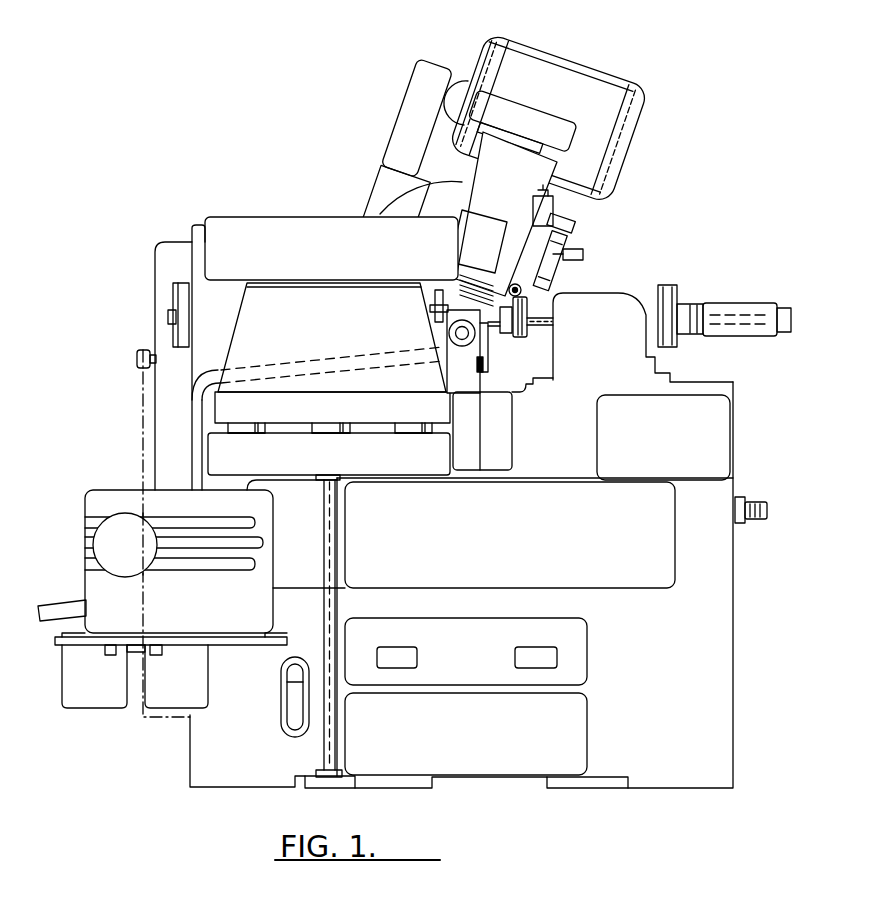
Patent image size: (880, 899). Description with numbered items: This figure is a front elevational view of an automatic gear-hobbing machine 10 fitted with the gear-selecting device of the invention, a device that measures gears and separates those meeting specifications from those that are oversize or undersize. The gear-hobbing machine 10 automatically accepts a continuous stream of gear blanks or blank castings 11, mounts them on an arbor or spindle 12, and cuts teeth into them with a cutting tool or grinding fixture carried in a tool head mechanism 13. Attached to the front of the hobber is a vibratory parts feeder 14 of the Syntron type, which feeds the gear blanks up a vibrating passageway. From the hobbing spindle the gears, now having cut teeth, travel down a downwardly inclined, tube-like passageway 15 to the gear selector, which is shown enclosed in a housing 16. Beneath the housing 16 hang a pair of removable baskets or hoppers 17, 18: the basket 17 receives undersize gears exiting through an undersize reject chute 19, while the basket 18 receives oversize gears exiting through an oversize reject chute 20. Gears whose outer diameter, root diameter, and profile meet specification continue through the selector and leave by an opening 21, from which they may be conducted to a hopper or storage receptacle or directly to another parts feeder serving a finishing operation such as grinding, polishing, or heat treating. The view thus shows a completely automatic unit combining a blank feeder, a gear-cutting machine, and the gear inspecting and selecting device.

The automatic gear-hobbing machine 10 is at (670, 258).
The gear blanks 11 is at (447, 336).
The arbor or spindle 12 is at (520, 338).
The tool head mechanism 13 is at (466, 243).
The vibratory parts feeder 14 is at (250, 314).
The tube-like passageway 15 is at (339, 358).
The housing 16 is at (96, 496).
The basket or hopper 17 is at (192, 686).
The basket or hopper 18 is at (108, 702).
The undersize reject chute 19 is at (156, 650).
The oversize reject chute 20 is at (110, 655).
The opening 21 is at (57, 604).